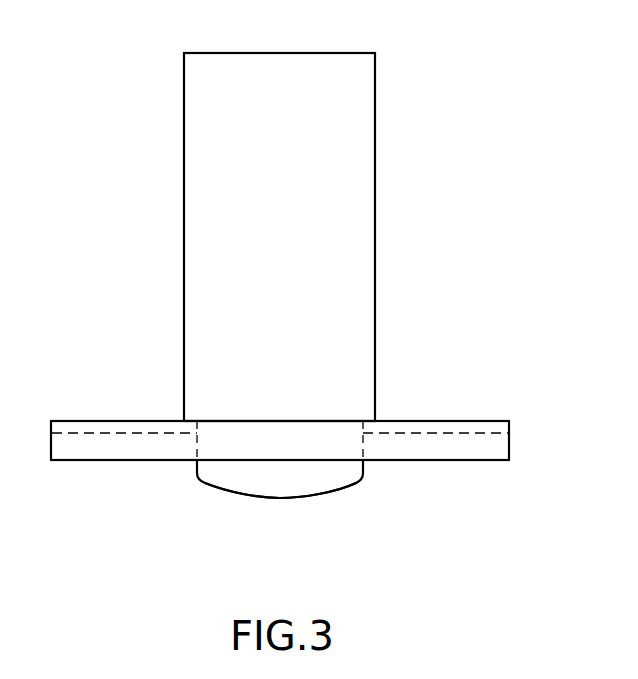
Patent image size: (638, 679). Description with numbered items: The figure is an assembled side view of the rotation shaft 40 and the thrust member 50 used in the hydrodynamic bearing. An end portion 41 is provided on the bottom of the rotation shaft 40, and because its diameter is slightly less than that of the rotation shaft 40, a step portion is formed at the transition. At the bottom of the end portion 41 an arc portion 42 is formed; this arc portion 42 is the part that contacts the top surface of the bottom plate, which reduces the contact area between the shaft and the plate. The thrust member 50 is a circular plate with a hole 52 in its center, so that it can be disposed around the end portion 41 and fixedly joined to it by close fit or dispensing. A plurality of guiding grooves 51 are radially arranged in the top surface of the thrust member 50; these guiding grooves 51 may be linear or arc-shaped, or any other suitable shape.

The rotation shaft 40 is at (205, 158).
The end portion 41 is at (323, 466).
The arc portion 42 is at (275, 497).
The thrust member 50 is at (450, 460).
The guiding grooves 51 is at (488, 430).
The hole 52 is at (363, 436).